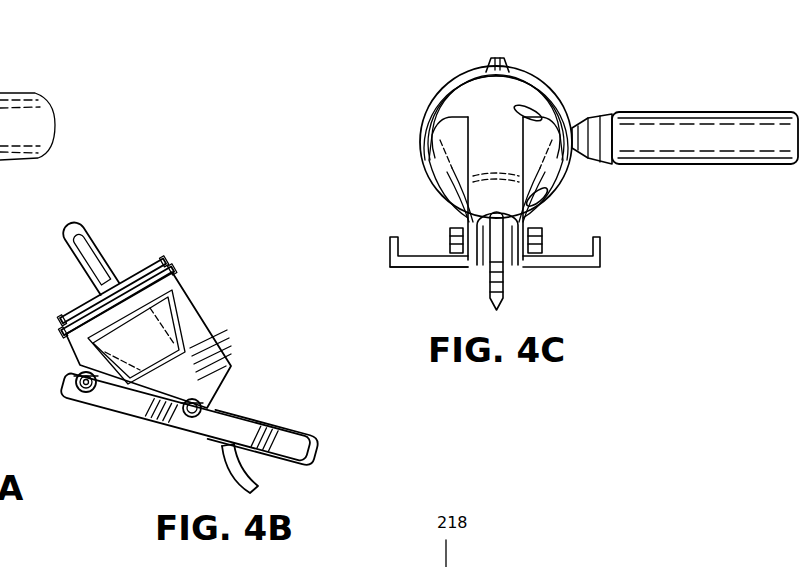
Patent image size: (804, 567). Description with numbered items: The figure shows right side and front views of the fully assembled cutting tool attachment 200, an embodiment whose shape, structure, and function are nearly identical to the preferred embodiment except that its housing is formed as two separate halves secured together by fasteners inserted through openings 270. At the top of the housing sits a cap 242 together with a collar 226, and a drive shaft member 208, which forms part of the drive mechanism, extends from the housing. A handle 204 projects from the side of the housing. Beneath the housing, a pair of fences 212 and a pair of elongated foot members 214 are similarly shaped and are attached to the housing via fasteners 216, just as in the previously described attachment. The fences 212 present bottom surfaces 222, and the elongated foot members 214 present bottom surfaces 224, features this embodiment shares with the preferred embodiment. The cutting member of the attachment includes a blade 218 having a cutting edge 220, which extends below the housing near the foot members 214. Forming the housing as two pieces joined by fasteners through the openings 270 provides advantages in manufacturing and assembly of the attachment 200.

In FIG. 4B, the cutting tool attachment 200 is at (212, 266).
In FIG. 4C, the cutting tool attachment 200 is at (579, 75).
In FIG. 4C, the handle 204 is at (647, 112).
In FIG. 4B, the drive shaft member 208 is at (88, 237).
In FIG. 4C, the drive shaft member 208 is at (500, 60).
In FIG. 4B, the pair of fences 212 is at (127, 408).
In FIG. 4C, the pair of fences 212 is at (392, 238).
In FIG. 4B, the pair of elongated foot members 214 is at (297, 430).
In FIG. 4C, the pair of elongated foot members 214 is at (477, 262).
In FIG. 4B, the fasteners 216 is at (67, 382).
In FIG. 4C, the fasteners 216 is at (452, 232).
In FIG. 4B, the blade 218 is at (225, 450).
In FIG. 4B, the cutting edge 220 is at (260, 472).
In FIG. 4C, the bottom surfaces of the pair of fences 222 is at (430, 270).
In FIG. 4C, the bottom surfaces of the pair of elongated foot members 224 is at (505, 268).
In FIG. 4B, the collar 226 is at (58, 328).
In FIG. 4C, the collar 226 is at (455, 88).
In FIG. 4B, the cap 242 is at (82, 299).
In FIG. 4C, the openings 270 is at (527, 108).